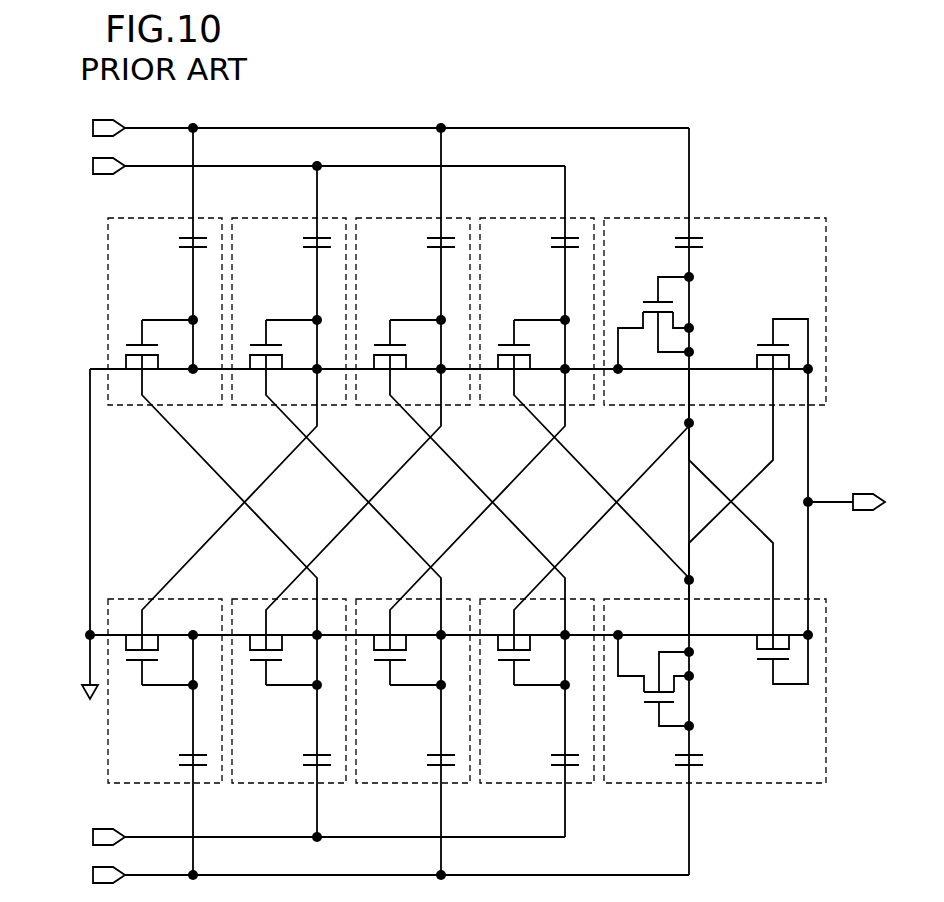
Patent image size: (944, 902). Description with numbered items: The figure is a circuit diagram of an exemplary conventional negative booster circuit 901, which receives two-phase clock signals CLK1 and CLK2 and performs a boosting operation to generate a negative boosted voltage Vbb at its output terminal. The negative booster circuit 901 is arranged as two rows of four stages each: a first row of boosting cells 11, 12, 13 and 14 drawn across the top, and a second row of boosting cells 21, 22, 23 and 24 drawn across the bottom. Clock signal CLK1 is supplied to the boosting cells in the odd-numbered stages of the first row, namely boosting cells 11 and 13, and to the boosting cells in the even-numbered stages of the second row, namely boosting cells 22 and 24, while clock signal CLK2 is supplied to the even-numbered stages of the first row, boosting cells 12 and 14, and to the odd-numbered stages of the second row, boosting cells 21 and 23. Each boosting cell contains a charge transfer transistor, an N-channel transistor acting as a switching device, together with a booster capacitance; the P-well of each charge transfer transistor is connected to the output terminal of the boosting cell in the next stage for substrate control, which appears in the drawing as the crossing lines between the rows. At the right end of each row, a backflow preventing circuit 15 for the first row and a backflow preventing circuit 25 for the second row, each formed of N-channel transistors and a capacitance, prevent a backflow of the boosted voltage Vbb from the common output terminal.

The negative booster circuit 901 is at (814, 122).
The boosting cell 11 is at (161, 217).
The boosting cell 12 is at (285, 217).
The boosting cell 13 is at (409, 217).
The boosting cell 14 is at (533, 217).
The backflow preventing circuit 15 is at (657, 217).
The boosting cell 21 is at (161, 787).
The boosting cell 22 is at (285, 787).
The boosting cell 23 is at (409, 787).
The boosting cell 24 is at (533, 787).
The backflow preventing circuit 25 is at (657, 787).